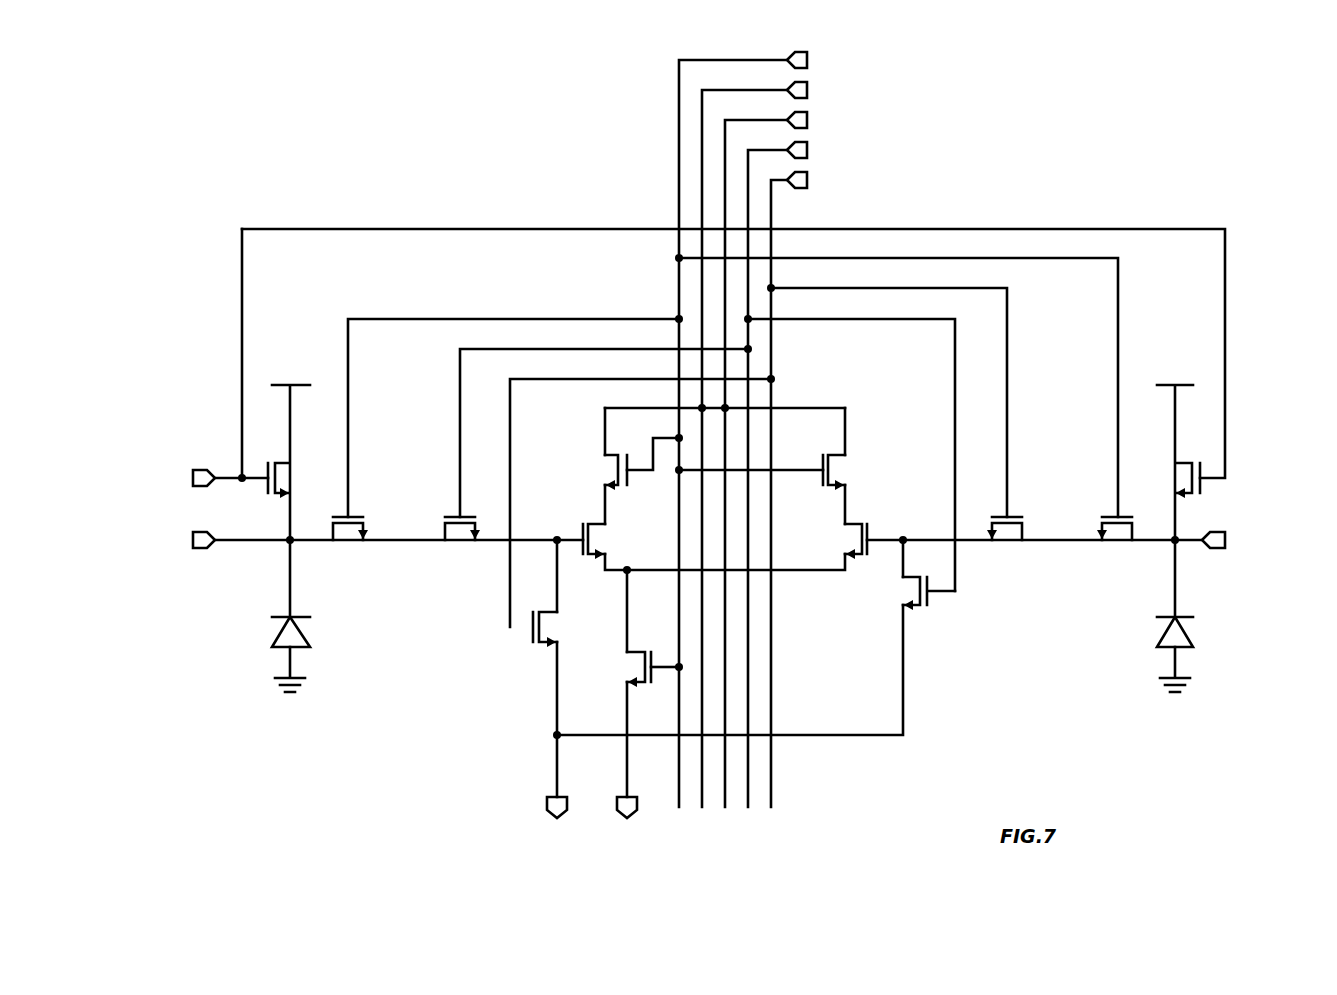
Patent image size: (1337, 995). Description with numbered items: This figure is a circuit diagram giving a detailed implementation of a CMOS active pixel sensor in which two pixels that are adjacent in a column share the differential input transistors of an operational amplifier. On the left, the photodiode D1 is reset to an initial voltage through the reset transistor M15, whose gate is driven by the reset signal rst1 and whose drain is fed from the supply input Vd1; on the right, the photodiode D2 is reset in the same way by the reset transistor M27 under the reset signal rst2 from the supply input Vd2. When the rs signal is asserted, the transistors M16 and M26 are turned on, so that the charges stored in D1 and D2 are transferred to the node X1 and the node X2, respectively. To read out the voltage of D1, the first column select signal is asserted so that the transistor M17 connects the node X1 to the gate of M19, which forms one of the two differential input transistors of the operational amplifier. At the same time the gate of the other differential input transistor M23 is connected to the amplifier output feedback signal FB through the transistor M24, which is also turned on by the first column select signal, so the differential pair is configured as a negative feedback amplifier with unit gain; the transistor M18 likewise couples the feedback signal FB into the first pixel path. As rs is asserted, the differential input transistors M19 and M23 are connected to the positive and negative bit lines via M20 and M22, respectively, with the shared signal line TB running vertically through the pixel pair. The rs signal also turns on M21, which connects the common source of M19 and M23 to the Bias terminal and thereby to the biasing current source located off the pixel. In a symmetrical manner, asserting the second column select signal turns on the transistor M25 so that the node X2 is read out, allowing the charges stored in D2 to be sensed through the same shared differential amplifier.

The reset transistor M15 is at (300, 462).
The transfer transistor M16 is at (349, 540).
The column select transistor M17 is at (460, 540).
The feedback transistor M18 is at (565, 629).
The differential input transistor M19 is at (613, 541).
The bitline connecting transistor M20 is at (596, 472).
The bias transistor M21 is at (620, 669).
The bitline connecting transistor M22 is at (856, 472).
The differential input transistor M23 is at (837, 541).
The feedback transistor M24 is at (910, 593).
The column select transistor M25 is at (1007, 540).
The transfer transistor M26 is at (1117, 540).
The reset transistor M27 is at (1169, 462).
The photodiode D1 is at (276, 616).
The photodiode D2 is at (1193, 616).
The node x1 X1 is at (406, 556).
The node x2 X2 is at (1061, 556).
The TB signal line TB is at (760, 428).
The reset signal rst1 is at (210, 478).
The reset signal rst2 is at (1253, 478).
The drain voltage input Vd1 is at (183, 540).
The drain voltage input Vd2 is at (1238, 540).
The amplifier output feedback signal FB is at (556, 823).
The biasing current source terminal Bias is at (628, 823).